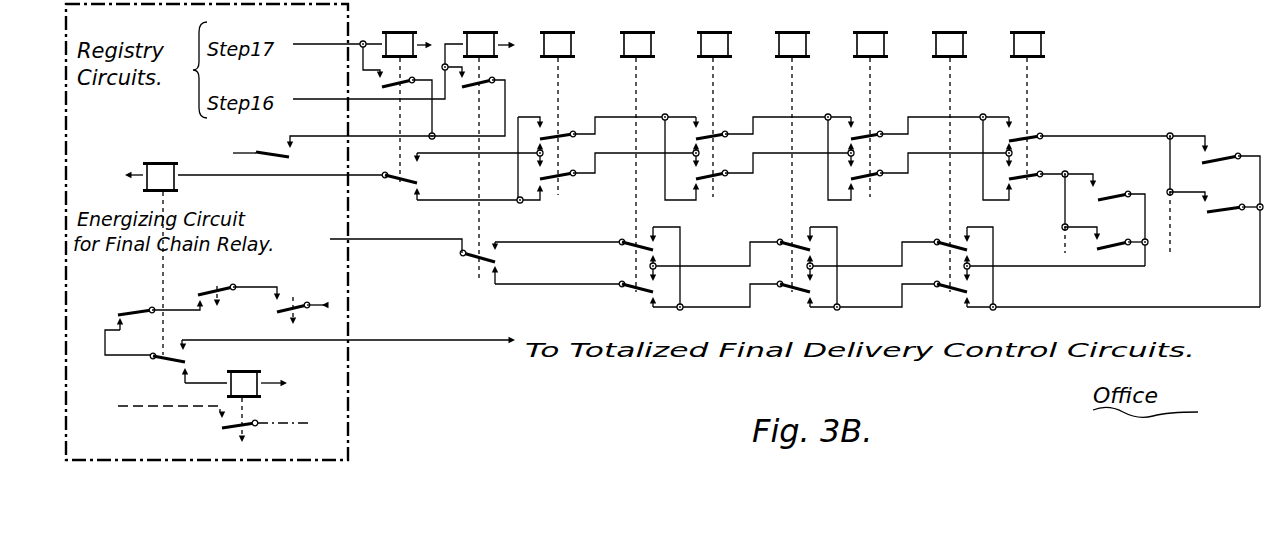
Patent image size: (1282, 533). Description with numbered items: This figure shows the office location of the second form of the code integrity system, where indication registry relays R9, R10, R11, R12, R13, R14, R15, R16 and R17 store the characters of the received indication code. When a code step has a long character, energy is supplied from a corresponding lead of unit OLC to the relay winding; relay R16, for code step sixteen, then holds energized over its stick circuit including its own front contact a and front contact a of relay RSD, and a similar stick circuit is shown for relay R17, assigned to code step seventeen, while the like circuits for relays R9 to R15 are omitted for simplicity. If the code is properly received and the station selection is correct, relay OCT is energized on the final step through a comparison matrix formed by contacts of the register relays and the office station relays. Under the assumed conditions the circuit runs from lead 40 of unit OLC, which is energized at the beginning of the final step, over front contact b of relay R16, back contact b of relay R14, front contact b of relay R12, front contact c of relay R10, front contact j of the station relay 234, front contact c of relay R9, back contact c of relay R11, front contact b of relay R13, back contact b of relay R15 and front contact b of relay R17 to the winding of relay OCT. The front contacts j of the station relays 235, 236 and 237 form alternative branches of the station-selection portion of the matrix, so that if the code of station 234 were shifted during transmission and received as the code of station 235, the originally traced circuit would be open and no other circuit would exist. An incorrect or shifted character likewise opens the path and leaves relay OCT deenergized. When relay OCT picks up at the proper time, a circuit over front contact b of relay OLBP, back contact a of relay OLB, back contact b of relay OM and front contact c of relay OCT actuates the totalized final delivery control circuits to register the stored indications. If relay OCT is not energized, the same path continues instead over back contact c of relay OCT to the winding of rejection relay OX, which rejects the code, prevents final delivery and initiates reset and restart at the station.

The lead 40 is at (323, 255).
The station relay 234 is at (1103, 207).
The station relay 235 is at (1213, 206).
The station relay 236 is at (1106, 234).
The station relay 237 is at (1216, 206).
The indication registry relay R9 is at (1107, 98).
The indication registry relay R10 is at (1090, 159).
The indication registry relay R11 is at (931, 104).
The indication registry relay R12 is at (852, 159).
The indication registry relay R13 is at (773, 104).
The indication registry relay R14 is at (696, 159).
The indication registry relay R15 is at (616, 104).
The indication registry relay R16 is at (454, 146).
The indication registry relay R17 is at (402, 95).
The relay OCT is at (260, 248).
The relay OM is at (303, 331).
The rejection relay OX is at (214, 394).
The relay OLB is at (229, 290).
The relay OLBP is at (302, 295).
The unit OLC is at (348, 400).
The relay RSD is at (260, 140).